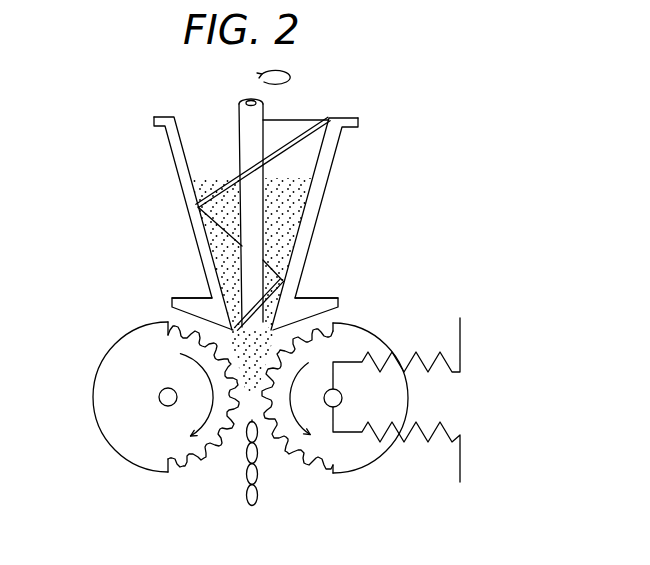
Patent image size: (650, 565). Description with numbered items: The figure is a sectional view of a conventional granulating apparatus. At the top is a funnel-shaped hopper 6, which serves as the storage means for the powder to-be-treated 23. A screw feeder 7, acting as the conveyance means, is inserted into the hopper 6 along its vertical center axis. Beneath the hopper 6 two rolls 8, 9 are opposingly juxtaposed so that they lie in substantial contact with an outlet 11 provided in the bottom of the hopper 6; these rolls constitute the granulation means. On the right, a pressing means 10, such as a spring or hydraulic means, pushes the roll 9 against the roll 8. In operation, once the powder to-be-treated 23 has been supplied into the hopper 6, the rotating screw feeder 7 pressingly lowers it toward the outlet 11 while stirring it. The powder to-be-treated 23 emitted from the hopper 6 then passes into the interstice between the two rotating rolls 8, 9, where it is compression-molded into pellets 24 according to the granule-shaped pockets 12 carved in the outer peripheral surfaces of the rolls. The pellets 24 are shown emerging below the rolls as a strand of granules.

The hopper 6 is at (176, 163).
The screw feeder 7 is at (303, 119).
The roll 8 is at (95, 397).
The roll 9 is at (354, 470).
The pressing means 10 is at (408, 438).
The outlet 11 is at (282, 314).
The granule-shaped pockets 12 is at (205, 462).
The powder to-be-treated 23 is at (304, 220).
The pellets 24 is at (252, 473).